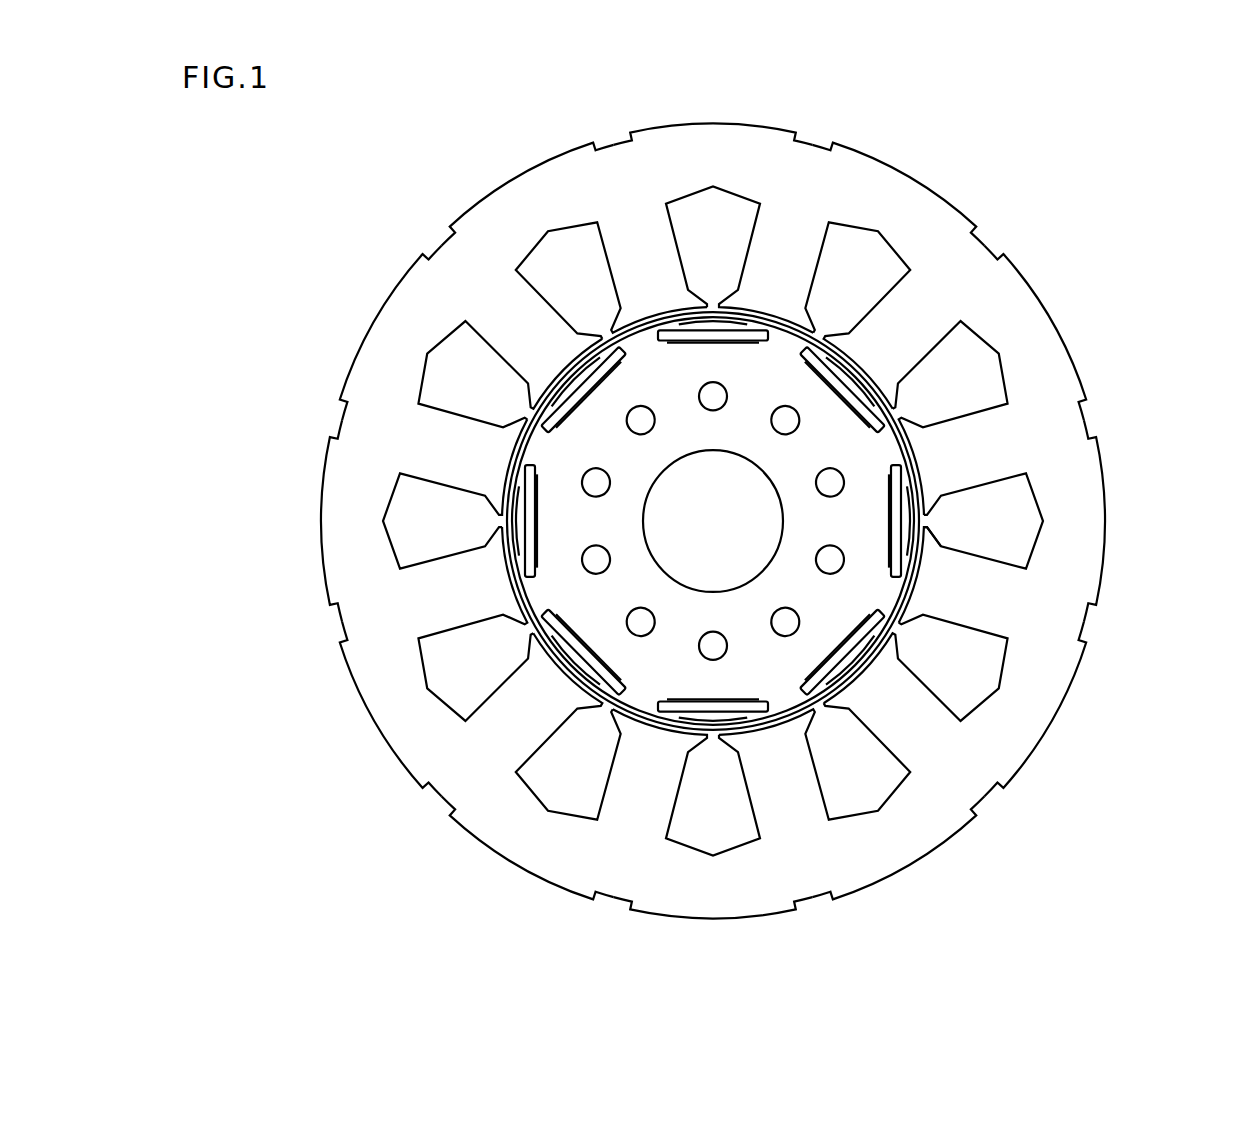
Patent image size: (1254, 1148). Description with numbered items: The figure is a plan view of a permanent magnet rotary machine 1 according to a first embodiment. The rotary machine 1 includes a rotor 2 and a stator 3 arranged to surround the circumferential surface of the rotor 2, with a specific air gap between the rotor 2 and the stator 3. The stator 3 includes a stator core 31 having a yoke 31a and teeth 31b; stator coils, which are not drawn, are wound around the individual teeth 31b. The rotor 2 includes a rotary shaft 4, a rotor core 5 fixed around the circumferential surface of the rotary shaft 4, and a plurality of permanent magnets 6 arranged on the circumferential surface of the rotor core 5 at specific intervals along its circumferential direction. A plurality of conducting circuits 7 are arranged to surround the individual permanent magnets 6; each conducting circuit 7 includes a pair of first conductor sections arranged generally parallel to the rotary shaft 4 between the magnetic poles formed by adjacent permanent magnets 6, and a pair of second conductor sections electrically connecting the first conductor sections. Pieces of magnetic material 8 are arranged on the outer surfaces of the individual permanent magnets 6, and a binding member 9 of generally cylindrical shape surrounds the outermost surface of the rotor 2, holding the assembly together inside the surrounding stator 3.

The permanent magnet rotary machine 1 is at (495, 150).
The rotor 2 is at (593, 410).
The stator 3 is at (507, 235).
The stator core 31 is at (1056, 100).
The yoke 31a is at (912, 205).
The teeth 31b is at (905, 312).
The rotary shaft 4 is at (863, 486).
The rotor core 5 is at (722, 515).
The permanent magnets 6 is at (897, 572).
The conducting circuits 7 is at (885, 589).
The pieces of magnetic material 8 is at (930, 527).
The binding member 9 is at (876, 652).